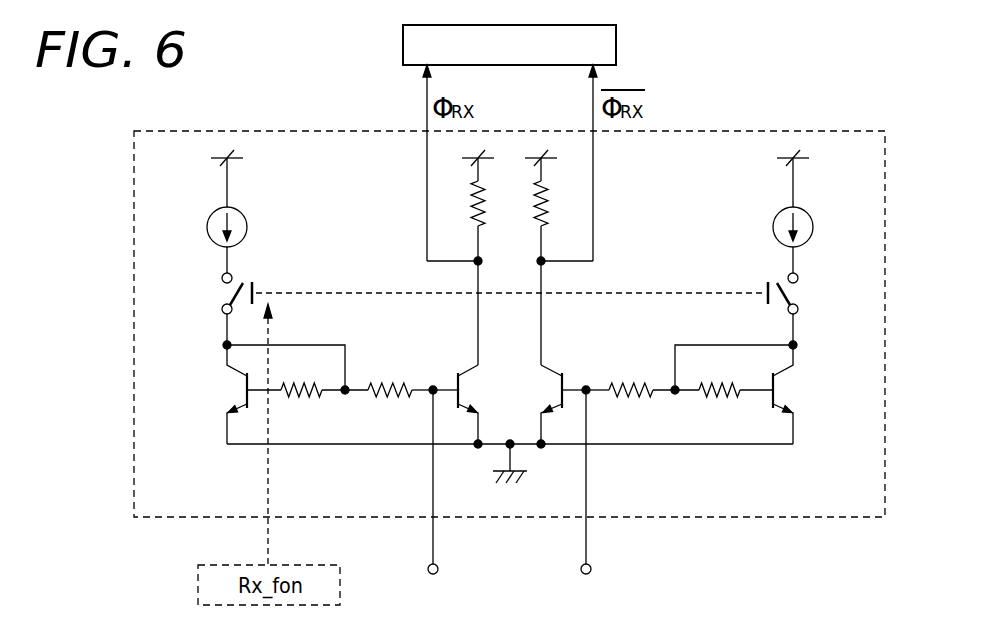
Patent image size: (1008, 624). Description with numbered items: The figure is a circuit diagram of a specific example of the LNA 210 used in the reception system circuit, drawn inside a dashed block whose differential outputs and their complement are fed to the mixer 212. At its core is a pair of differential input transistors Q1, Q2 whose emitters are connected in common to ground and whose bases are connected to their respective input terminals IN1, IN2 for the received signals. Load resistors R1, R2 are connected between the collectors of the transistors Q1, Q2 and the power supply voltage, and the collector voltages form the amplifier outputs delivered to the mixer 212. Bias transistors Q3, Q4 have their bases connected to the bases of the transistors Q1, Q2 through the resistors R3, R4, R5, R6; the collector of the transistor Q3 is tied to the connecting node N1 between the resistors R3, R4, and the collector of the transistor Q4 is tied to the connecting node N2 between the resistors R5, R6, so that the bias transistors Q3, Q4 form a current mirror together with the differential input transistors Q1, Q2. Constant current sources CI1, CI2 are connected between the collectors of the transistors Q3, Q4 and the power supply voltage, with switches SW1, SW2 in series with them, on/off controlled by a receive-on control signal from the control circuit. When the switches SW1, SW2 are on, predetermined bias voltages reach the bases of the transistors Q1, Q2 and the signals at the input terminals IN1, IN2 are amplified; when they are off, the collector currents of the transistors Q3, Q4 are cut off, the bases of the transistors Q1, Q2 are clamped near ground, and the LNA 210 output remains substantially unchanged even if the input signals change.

The mixer 212 is at (616, 43).
The LNA (Low Noise Amplifier) 210 is at (790, 131).
The constant current source CI1 is at (206, 227).
The constant current source CI2 is at (815, 227).
The switch SW1 is at (207, 293).
The switch SW2 is at (813, 293).
The differential input transistor Q1 is at (453, 394).
The differential input transistor Q2 is at (564, 394).
The bias transistor Q3 is at (238, 394).
The bias transistor Q4 is at (781, 394).
The load resistor R1 is at (459, 203).
The load resistor R2 is at (561, 203).
The resistor R3 is at (390, 410).
The resistor R4 is at (301, 410).
The resistor R5 is at (631, 410).
The resistor R6 is at (719, 410).
The connecting node N1 is at (292, 385).
The connecting node N2 is at (726, 385).
The input terminal IN1 is at (432, 499).
The input terminal IN2 is at (585, 499).